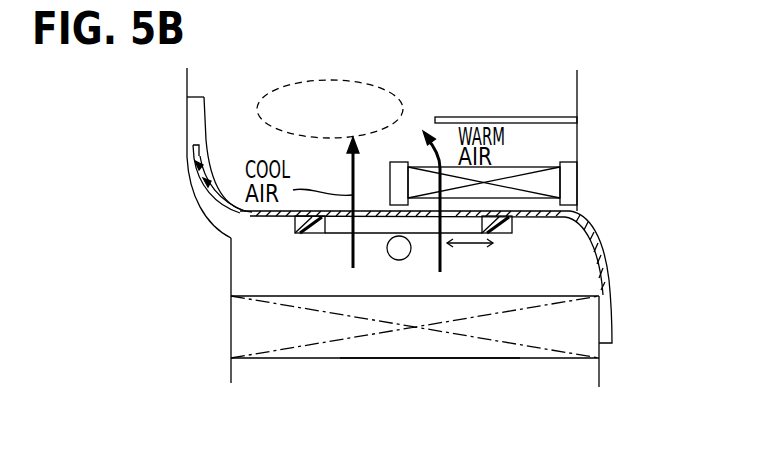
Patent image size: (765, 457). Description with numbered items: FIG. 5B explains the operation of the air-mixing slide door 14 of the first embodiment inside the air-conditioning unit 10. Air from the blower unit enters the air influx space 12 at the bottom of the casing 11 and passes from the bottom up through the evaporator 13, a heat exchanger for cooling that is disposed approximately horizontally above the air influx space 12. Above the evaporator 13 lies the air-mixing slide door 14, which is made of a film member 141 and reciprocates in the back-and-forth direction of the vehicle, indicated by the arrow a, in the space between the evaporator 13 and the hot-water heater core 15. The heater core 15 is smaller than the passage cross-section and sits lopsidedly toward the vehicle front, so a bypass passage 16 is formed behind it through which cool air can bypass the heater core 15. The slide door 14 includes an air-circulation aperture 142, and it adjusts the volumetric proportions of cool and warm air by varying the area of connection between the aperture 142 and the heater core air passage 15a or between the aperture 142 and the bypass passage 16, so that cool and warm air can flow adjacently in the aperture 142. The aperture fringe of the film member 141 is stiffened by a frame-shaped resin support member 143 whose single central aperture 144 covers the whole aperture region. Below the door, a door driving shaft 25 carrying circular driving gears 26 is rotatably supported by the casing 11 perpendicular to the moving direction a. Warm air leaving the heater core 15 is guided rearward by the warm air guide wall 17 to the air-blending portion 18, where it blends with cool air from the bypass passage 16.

The air-conditioning unit 10 is at (623, 322).
The casing 11 is at (610, 272).
The air influx space 12 is at (405, 367).
The evaporator 13 is at (463, 352).
The air-mixing slide door 14 is at (270, 224).
The film member 141 is at (257, 218).
The air-circulation aperture 142 is at (372, 210).
The support member 143 is at (305, 234).
The aperture 144 is at (337, 226).
The heater core 15 is at (543, 182).
The air passage 15a is at (525, 207).
The bypass passage 16 is at (315, 180).
The warm air guide wall 17 is at (502, 113).
The air-blending portion 18 is at (424, 88).
The door driving shaft 25 is at (367, 345).
The driving gears 26 is at (400, 260).
The door moving direction a is at (470, 247).